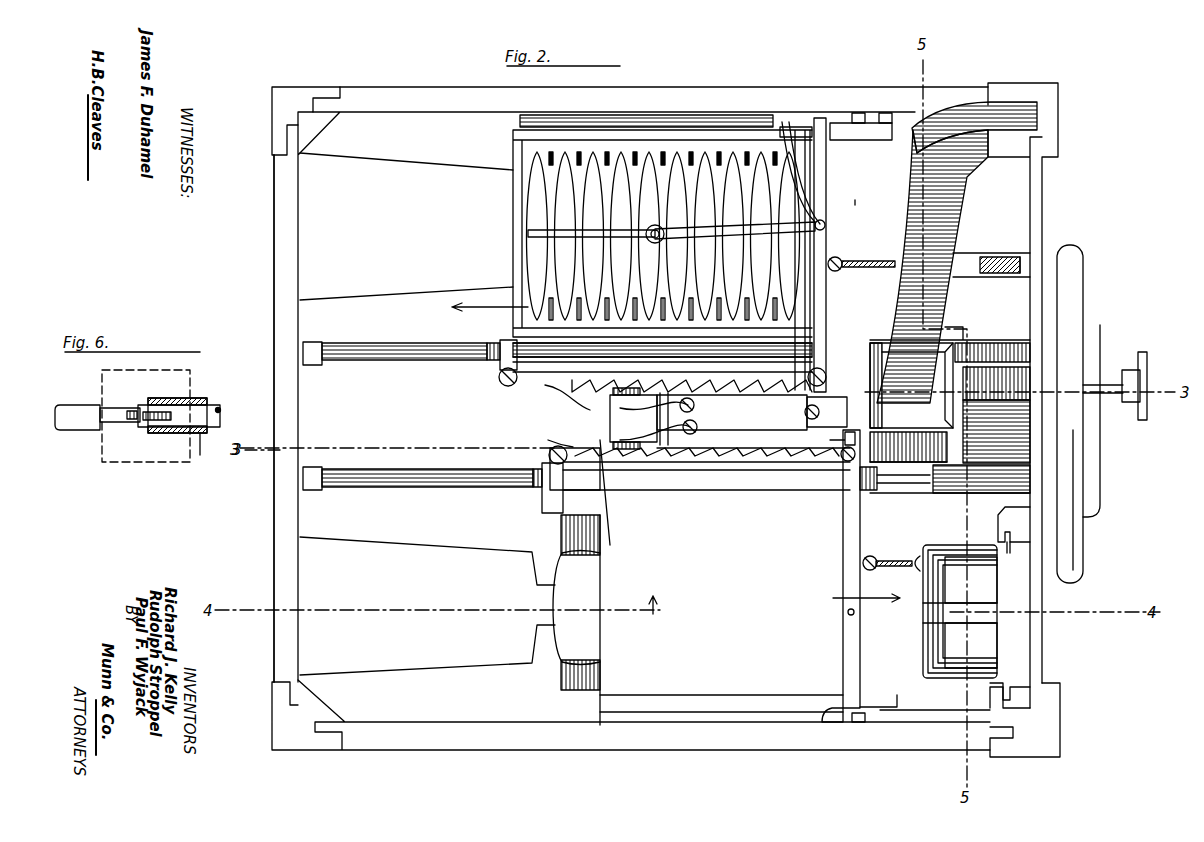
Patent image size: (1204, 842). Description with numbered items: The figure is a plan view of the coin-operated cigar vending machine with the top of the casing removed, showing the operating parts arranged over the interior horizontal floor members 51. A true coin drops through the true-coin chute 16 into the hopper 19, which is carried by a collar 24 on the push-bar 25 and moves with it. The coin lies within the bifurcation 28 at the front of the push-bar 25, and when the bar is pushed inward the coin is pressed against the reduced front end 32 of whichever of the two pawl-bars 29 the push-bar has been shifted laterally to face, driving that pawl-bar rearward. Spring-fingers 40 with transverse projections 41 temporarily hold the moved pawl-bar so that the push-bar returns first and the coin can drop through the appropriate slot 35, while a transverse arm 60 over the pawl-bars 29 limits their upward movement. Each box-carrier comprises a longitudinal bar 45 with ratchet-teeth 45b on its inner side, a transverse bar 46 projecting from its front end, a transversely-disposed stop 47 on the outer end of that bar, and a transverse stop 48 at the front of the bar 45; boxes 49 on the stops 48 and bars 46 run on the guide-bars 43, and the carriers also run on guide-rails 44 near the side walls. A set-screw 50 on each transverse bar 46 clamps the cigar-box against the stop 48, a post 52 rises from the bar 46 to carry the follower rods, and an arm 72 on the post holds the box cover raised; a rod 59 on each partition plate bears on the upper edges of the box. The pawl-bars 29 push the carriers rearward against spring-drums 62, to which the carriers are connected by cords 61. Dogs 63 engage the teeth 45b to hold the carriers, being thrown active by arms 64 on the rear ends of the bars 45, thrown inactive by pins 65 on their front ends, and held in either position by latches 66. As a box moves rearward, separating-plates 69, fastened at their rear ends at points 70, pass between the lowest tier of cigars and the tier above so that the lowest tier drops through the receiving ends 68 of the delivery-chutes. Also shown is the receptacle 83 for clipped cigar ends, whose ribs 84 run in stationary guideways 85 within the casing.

In FIG. 2, the fastening points 70 is at (274, 238).
In FIG. 2, the separating-plates 69 is at (427, 414).
In FIG. 2, the receiving ends of delivery-chutes 68 is at (583, 672).
In FIG. 2, the transverse bar 46 is at (410, 345).
In FIG. 2, the boxes 49 is at (490, 352).
In FIG. 2, the transverse stop 48 is at (505, 370).
In FIG. 2, the guide-bars 43 is at (480, 469).
In FIG. 2, the rod 59 is at (520, 140).
In FIG. 2, the post 52 is at (775, 225).
In FIG. 2, the arm 72 is at (812, 175).
In FIG. 2, the transversely-disposed stop 47 is at (797, 120).
In FIG. 2, the transverse projections 41 is at (848, 355).
In FIG. 2, the guide-rails 44 is at (840, 133).
In FIG. 2, the set-screw 50 is at (815, 120).
In FIG. 2, the cords 61 is at (893, 260).
In FIG. 2, the floor members 51 is at (800, 410).
In FIG. 2, the true-coin chute 16 is at (950, 206).
In FIG. 2, the spring-drums 62 is at (983, 252).
In FIG. 2, the hopper 19 is at (950, 395).
In FIG. 6, the hopper 19 is at (118, 462).
In FIG. 2, the slots 35 is at (905, 493).
In FIG. 2, the push-bar 25 is at (1100, 325).
In FIG. 6, the push-bar 25 is at (222, 416).
In FIG. 2, the receptacle 83 is at (960, 611).
In FIG. 2, the ribs 84 is at (1013, 606).
In FIG. 2, the guideways 85 is at (1028, 700).
In FIG. 2, the longitudinal bar 45 is at (548, 382).
In FIG. 2, the ratchet-teeth 45b is at (700, 540).
In FIG. 2, the transverse arm 60 is at (655, 408).
In FIG. 2, the dogs 63 is at (612, 405).
In FIG. 2, the arms 64 is at (560, 398).
In FIG. 2, the latches 66 is at (680, 400).
In FIG. 2, the pawl-bars 29 is at (770, 450).
In FIG. 6, the pawl-bars 29 is at (82, 430).
In FIG. 2, the spring-fingers 40 is at (807, 412).
In FIG. 2, the pins 65 is at (808, 378).
In FIG. 6, the reduced front end 32 is at (118, 408).
In FIG. 6, the bifurcation 28 is at (160, 433).
In FIG. 6, the collar 24 is at (209, 454).